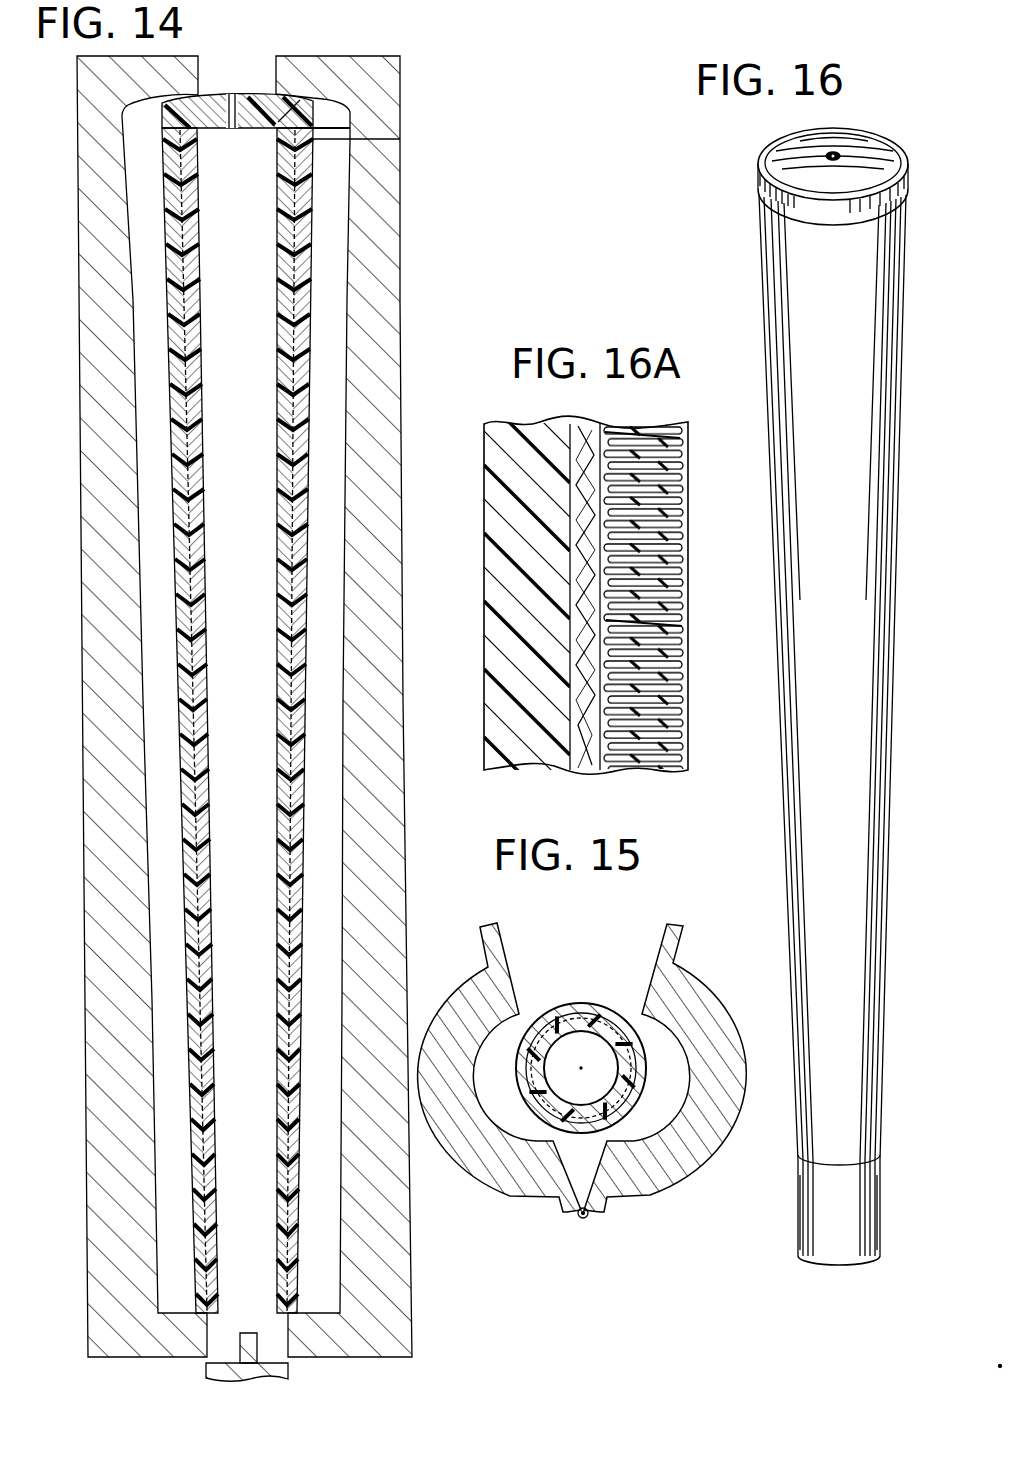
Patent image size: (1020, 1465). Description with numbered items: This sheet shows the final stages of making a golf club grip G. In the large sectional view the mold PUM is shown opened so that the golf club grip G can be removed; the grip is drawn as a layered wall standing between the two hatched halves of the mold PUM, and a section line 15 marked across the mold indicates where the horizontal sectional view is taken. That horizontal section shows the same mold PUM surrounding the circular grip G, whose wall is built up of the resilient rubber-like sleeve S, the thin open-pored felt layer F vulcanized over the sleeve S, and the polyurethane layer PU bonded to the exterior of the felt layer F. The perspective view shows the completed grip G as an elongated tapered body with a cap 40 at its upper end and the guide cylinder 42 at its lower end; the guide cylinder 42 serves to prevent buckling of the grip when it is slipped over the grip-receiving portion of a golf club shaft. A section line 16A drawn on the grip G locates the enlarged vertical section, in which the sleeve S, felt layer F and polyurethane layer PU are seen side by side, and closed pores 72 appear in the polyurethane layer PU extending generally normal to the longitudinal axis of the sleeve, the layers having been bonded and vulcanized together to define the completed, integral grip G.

In FIG. 14, the mold PUM is at (90, 522).
In FIG. 15, the mold PUM is at (525, 1188).
In FIG. 14, the resilient rubber-like sleeve S is at (287, 210).
In FIG. 16A, the resilient rubber-like sleeve S is at (487, 659).
In FIG. 14, the polyurethane layer PU is at (300, 251).
In FIG. 16A, the polyurethane layer PU is at (645, 762).
In FIG. 14, the felt layer F is at (192, 598).
In FIG. 16A, the felt layer F is at (585, 762).
In FIG. 15, the golf club grip G is at (580, 1003).
In FIG. 16, the golf club grip G is at (832, 730).
In FIG. 16A, the closed pores 72 is at (679, 606).
In FIG. 16, the grip cap 40 is at (762, 163).
In FIG. 16, the guide cylinder 42 is at (800, 1212).
In FIG. 14, the section line 15— 15 is at (77, 400).
In FIG. 16, the section line 16A— 16A is at (805, 392).